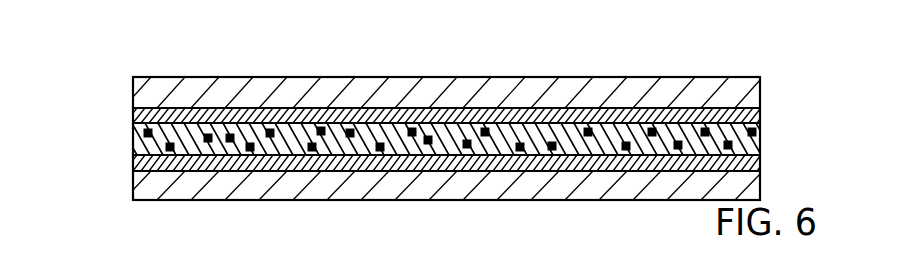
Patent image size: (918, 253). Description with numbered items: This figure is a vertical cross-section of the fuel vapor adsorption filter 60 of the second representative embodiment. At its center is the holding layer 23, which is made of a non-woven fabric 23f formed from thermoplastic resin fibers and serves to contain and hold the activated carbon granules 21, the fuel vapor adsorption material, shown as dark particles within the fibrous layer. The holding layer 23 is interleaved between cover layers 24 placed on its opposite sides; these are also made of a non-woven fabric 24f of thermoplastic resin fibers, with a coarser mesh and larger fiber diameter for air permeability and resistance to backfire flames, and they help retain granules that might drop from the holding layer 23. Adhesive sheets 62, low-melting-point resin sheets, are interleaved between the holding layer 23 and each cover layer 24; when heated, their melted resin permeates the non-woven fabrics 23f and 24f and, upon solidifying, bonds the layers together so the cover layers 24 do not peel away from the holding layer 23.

The fuel vapor adsorption filter 60 is at (728, 58).
The adhesive sheets 62 is at (760, 117).
The cover layers 24 is at (497, 86).
The non-woven fabric 24f is at (432, 92).
The holding layer 23 is at (120, 142).
The non-woven fabric 23f is at (191, 133).
The activated carbon granules 21 is at (167, 153).